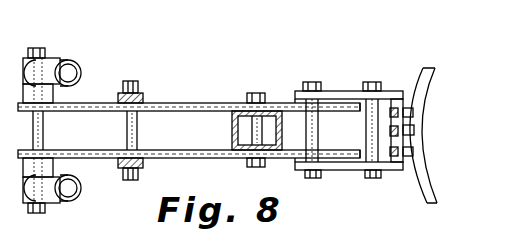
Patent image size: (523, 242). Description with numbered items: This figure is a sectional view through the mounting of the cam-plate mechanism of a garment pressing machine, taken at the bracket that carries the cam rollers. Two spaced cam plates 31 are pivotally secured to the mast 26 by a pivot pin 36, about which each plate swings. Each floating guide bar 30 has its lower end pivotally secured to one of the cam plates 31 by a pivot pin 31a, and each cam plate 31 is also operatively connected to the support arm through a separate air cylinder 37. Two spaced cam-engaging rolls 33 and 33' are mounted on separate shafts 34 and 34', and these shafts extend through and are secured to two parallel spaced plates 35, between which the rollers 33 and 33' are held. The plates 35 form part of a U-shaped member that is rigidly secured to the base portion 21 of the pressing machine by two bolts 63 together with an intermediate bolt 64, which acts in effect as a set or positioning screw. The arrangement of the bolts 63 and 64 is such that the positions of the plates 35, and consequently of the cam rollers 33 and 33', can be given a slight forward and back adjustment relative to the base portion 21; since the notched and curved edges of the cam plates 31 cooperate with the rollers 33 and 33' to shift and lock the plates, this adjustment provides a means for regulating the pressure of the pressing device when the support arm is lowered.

The base portion 21 is at (435, 194).
The mast 26 is at (232, 124).
The floating guide bar 30 is at (142, 92).
The cam plate 31 is at (206, 87).
The pivot pin 31a is at (125, 118).
The cam-engaging roll 33 is at (282, 143).
The cam-engaging roll 33' is at (385, 149).
The shaft 34 is at (293, 119).
The shaft 34' is at (380, 115).
The plate 35 is at (343, 77).
The pivot pin 36 is at (250, 140).
The air cylinder 37 is at (77, 58).
The bolt 63 is at (408, 108).
The intermediate bolt 64 is at (414, 128).